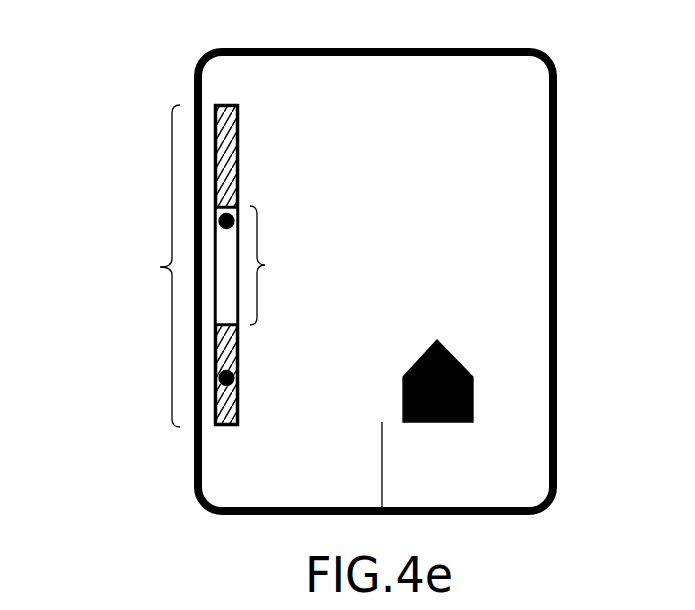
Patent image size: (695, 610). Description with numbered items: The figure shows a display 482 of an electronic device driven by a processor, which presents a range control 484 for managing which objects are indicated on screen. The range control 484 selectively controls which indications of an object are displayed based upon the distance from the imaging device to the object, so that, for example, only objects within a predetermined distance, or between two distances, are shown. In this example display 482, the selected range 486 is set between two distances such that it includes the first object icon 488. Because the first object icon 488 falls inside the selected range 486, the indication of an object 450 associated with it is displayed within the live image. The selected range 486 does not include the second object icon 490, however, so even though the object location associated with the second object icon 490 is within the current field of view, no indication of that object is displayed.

The display 482 is at (375, 266).
The range control 484 is at (145, 267).
The selected range 486 is at (280, 265).
The first object icon 488 is at (250, 221).
The second object icon 490 is at (440, 357).
The indication of an object 450 is at (495, 393).